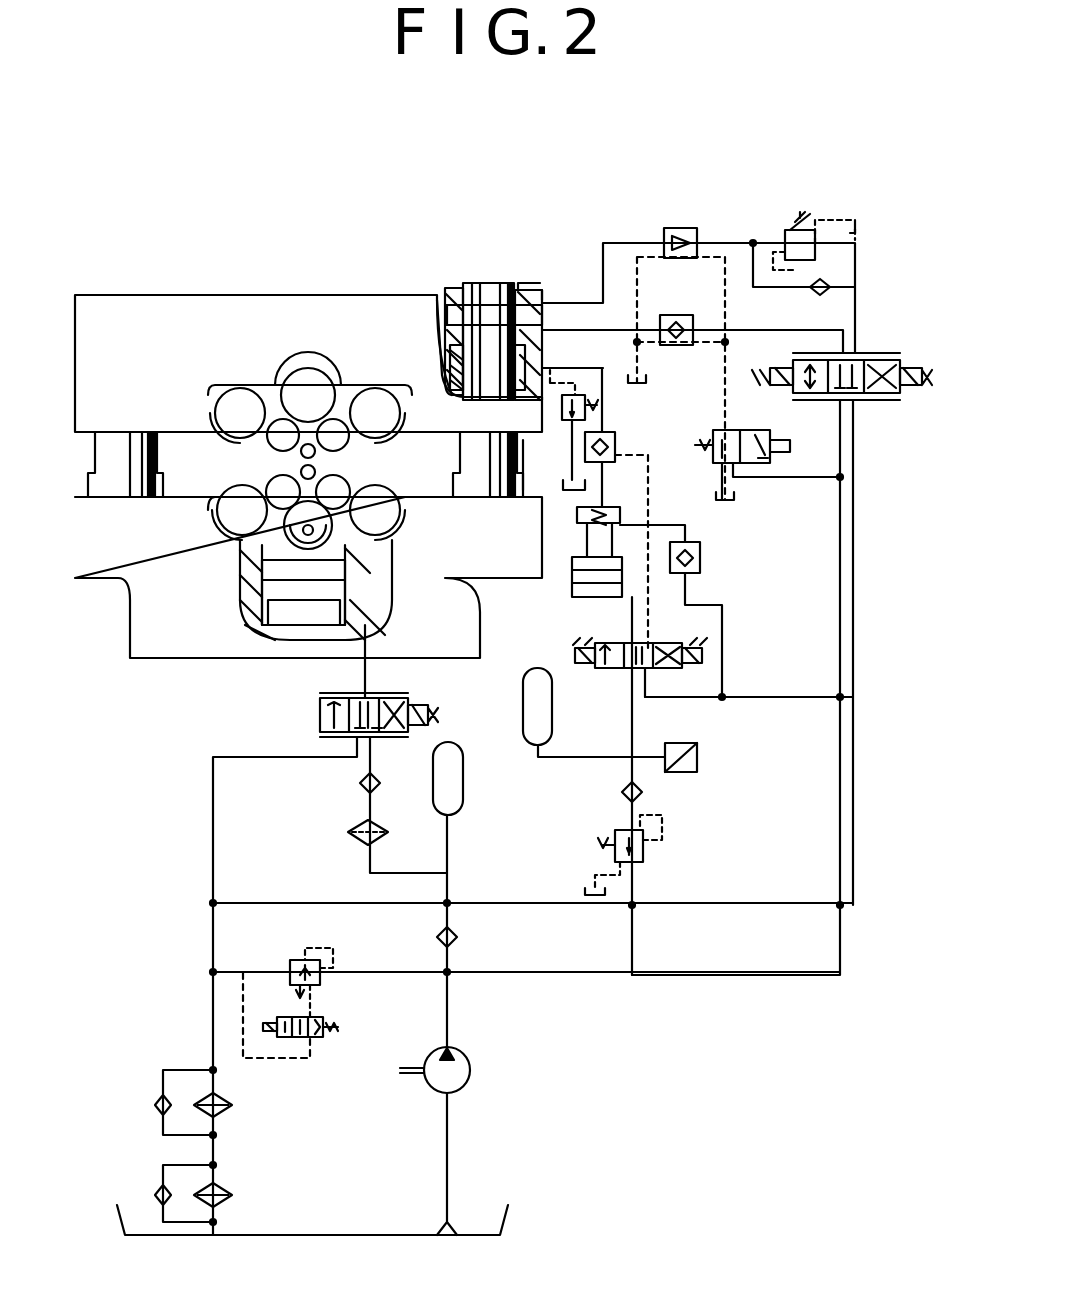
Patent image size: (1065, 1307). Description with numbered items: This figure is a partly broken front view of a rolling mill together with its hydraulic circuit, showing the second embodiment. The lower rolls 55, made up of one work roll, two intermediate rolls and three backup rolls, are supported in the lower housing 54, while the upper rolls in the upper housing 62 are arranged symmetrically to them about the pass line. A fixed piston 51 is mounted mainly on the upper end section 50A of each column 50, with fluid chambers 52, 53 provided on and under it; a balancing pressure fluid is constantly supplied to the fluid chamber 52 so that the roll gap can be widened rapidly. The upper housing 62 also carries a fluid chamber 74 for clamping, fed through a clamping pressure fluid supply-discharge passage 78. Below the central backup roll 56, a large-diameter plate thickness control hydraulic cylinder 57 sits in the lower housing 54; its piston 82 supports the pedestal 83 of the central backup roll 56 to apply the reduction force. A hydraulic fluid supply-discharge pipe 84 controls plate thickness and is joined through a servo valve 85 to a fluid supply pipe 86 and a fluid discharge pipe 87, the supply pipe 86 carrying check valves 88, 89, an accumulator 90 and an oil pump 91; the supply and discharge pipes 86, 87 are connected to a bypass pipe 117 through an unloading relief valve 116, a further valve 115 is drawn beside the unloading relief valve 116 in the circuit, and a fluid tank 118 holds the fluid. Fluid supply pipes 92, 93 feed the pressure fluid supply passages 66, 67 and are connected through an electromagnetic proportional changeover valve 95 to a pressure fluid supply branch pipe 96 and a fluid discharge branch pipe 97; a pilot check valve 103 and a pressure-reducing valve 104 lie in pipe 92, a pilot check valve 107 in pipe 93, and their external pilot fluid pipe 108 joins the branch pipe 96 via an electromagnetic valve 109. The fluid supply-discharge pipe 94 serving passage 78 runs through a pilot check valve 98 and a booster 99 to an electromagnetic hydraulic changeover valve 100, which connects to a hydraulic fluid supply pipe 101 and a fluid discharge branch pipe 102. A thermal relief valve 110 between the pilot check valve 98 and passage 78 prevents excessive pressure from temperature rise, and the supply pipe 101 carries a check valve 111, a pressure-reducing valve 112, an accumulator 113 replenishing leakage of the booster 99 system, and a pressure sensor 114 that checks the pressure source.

The column 50 is at (120, 455).
The upper end section 50A is at (455, 288).
The fixed piston 51 is at (438, 318).
The fluid chamber 52 is at (470, 283).
The fluid chamber 53 is at (447, 318).
The lower housing 54 is at (150, 633).
The lower rolls 55 is at (228, 500).
The central backup roll 56 is at (300, 515).
The plate thickness control hydraulic cylinder 57 is at (262, 640).
The upper housing 62 is at (243, 300).
The pressure fluid supply passage 66 is at (520, 283).
The pressure fluid supply passage 67 is at (542, 290).
The fluid chamber for clamping 74 is at (450, 365).
The clamping pressure fluid supply-discharge passage 78 is at (542, 362).
The piston 82 is at (305, 620).
The pedestal 83 is at (270, 570).
The hydraulic fluid supply-discharge pipe 84 is at (365, 675).
The servo valve 85 is at (320, 718).
The fluid supply pipe 86 is at (365, 862).
The fluid discharge pipe 87 is at (213, 826).
The check valve 88 is at (360, 783).
The check valve 89 is at (457, 937).
The accumulator 90 is at (463, 795).
The oil pump 91 is at (470, 1072).
The fluid supply pipe 92 is at (590, 303).
The fluid supply pipe 93 is at (622, 330).
The fluid supply-discharge pipe 94 is at (603, 404).
The electromagnetic proportional changeover valve 95 is at (880, 360).
The pressure fluid supply branch pipe 96 is at (840, 550).
The fluid discharge branch pipe 97 is at (853, 548).
The pilot check valve 98 is at (615, 437).
The booster 99 is at (572, 595).
The electromagnetic hydraulic changeover valve 100 is at (612, 668).
The hydraulic fluid supply pipe 101 is at (632, 722).
The fluid discharge branch pipe 102 is at (718, 697).
The pilot check valve 103 is at (690, 228).
The pressure-reducing valve 104 is at (790, 230).
The pilot check valve 107 is at (676, 315).
The external pilot fluid pipe 108 is at (718, 345).
The electromagnetic valve 109 is at (770, 440).
The thermal relief valve 110 is at (536, 463).
The check valve 111 is at (622, 792).
The pressure-reducing valve 112 is at (643, 858).
The accumulator 113 is at (523, 712).
The pressure sensor 114 is at (697, 758).
The solenoid valve 115 is at (318, 1040).
The unloading relief valve 116 is at (295, 960).
The bypass pipe 117 is at (378, 972).
The fluid tank 118 is at (340, 1235).